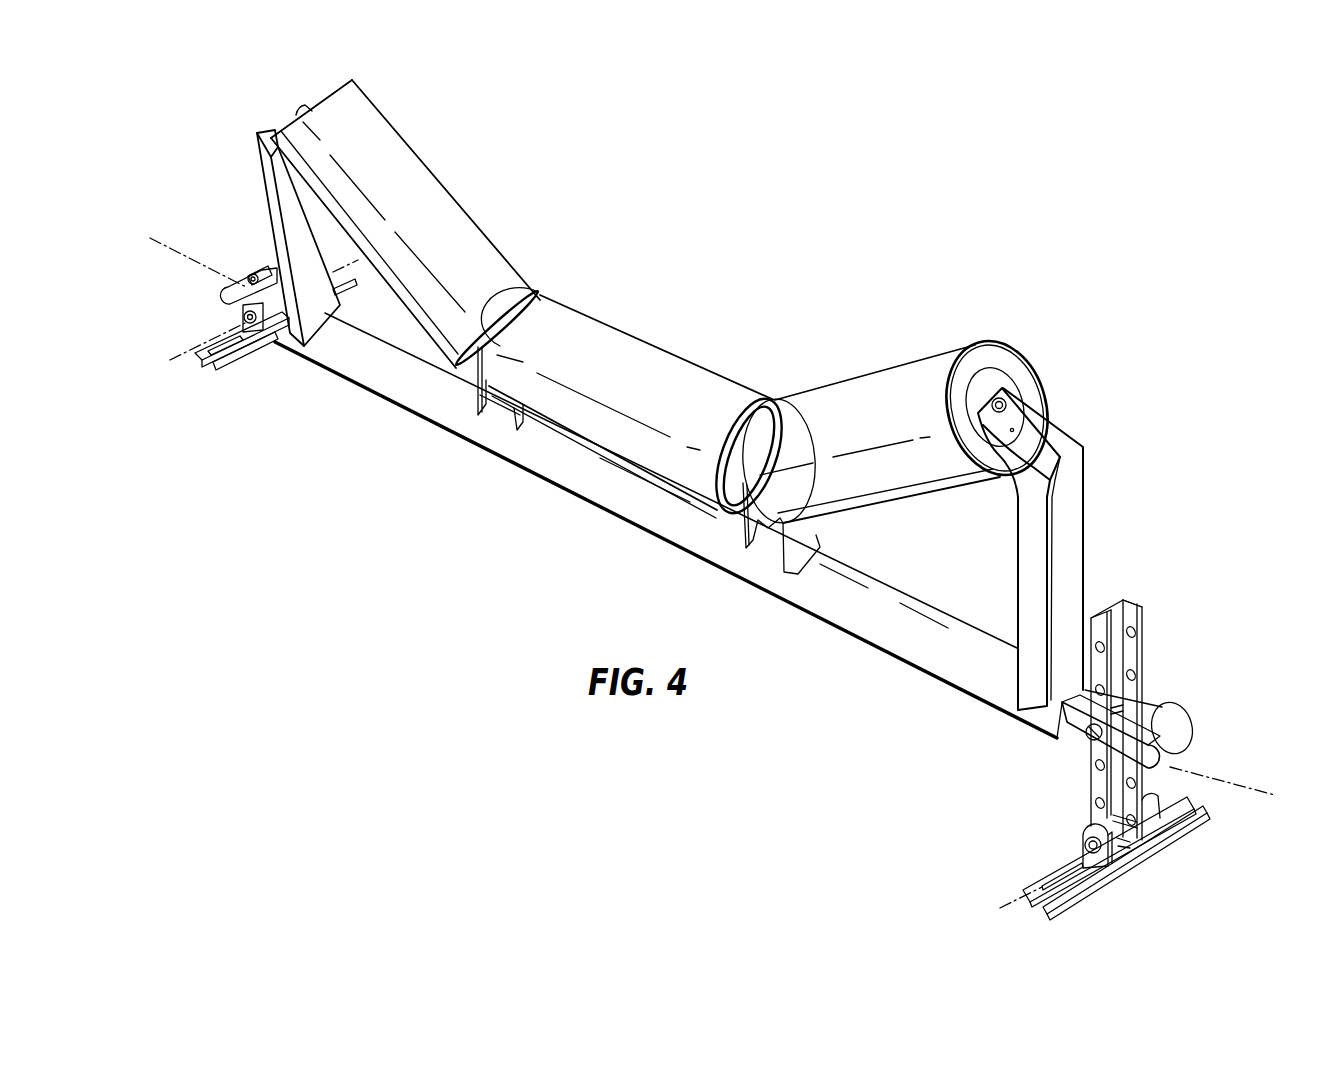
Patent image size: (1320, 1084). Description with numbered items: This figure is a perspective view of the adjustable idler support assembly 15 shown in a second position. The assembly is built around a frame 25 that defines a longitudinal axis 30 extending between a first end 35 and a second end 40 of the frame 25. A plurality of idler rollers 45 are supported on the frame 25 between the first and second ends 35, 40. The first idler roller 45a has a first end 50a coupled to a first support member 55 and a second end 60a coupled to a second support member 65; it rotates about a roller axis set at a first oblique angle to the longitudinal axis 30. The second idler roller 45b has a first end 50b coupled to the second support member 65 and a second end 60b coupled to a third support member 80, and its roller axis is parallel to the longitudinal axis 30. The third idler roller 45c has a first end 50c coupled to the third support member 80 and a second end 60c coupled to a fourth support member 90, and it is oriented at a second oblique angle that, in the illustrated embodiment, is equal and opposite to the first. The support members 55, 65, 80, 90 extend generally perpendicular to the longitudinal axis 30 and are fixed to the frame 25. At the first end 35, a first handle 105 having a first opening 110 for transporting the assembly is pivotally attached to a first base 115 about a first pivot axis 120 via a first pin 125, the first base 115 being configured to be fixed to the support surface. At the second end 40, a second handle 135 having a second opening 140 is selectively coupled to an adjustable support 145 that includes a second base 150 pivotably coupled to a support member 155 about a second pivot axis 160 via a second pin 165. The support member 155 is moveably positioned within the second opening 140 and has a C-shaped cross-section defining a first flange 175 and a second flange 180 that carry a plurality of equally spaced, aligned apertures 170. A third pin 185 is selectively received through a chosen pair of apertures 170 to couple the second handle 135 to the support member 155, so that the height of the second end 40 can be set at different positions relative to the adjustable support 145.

The adjustable idler support assembly 15 is at (858, 192).
The frame 25 is at (828, 627).
The longitudinal axis 30 is at (190, 252).
The first end 35 is at (290, 372).
The second end 40 is at (995, 756).
The idler rollers 45 is at (648, 252).
The first idler roller 45a is at (414, 216).
The second idler roller 45b is at (637, 390).
The third idler roller 45c is at (900, 395).
The first end 50a is at (326, 93).
The first end 50b is at (518, 338).
The first end 50c is at (777, 410).
The first support member 55 is at (260, 168).
The second end 60a is at (493, 297).
The second end 60b is at (724, 415).
The second end 60c is at (985, 341).
The second support member 65 is at (507, 420).
The third support member 80 is at (745, 532).
The fourth support member 90 is at (1083, 442).
The first handle 105 is at (250, 273).
The first opening 110 is at (245, 290).
The first base 115 is at (228, 372).
The first pivot axis 120 is at (177, 352).
The first pin 125 is at (252, 331).
The second handle 135 is at (1172, 742).
The second opening 140 is at (1153, 721).
The adjustable support 145 is at (1218, 640).
The second base 150 is at (1132, 865).
The support member 155 is at (1137, 553).
The second pivot axis 160 is at (1008, 898).
The second pin 165 is at (1093, 853).
The apertures 170 is at (1160, 638).
The first flange 175 is at (1112, 610).
The second flange 180 is at (1131, 604).
The third pin 185 is at (1090, 738).